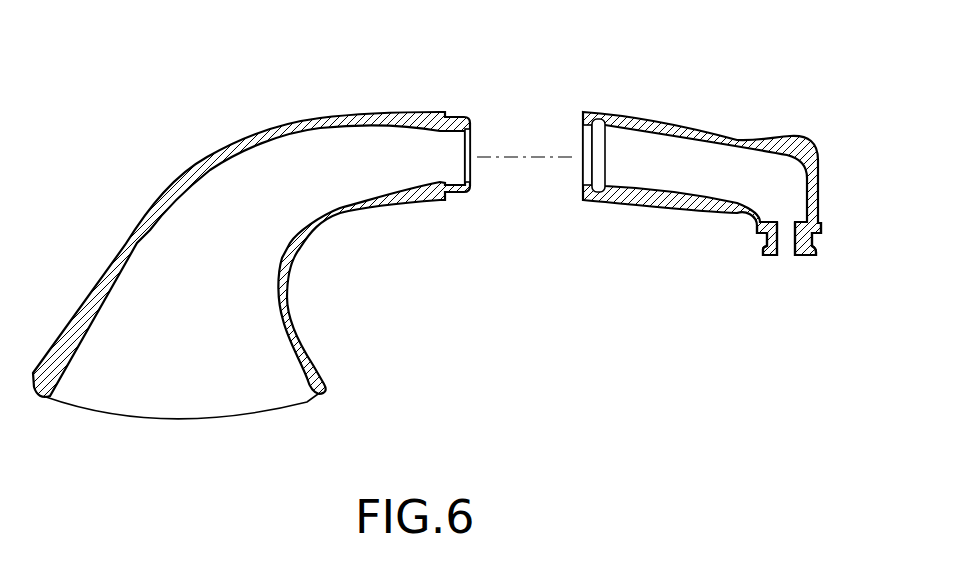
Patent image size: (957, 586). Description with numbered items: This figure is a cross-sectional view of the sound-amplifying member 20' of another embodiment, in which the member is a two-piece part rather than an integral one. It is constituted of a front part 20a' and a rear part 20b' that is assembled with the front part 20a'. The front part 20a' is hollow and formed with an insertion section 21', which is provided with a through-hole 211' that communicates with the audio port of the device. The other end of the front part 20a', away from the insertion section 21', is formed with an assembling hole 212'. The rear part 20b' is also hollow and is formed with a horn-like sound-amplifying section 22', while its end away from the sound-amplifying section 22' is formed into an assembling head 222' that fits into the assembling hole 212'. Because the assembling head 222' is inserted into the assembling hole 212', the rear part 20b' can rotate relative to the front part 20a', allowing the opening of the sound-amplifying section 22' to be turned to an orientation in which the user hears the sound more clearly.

The sound-amplifying member 20' is at (427, 263).
The front part 20a' is at (670, 204).
The rear part 20b' is at (305, 277).
The insertion section 21' is at (726, 273).
The through-hole 211' is at (793, 297).
The assembling hole 212' is at (562, 126).
The assembling head 222' is at (516, 184).
The sound-amplifying section 22' is at (182, 460).